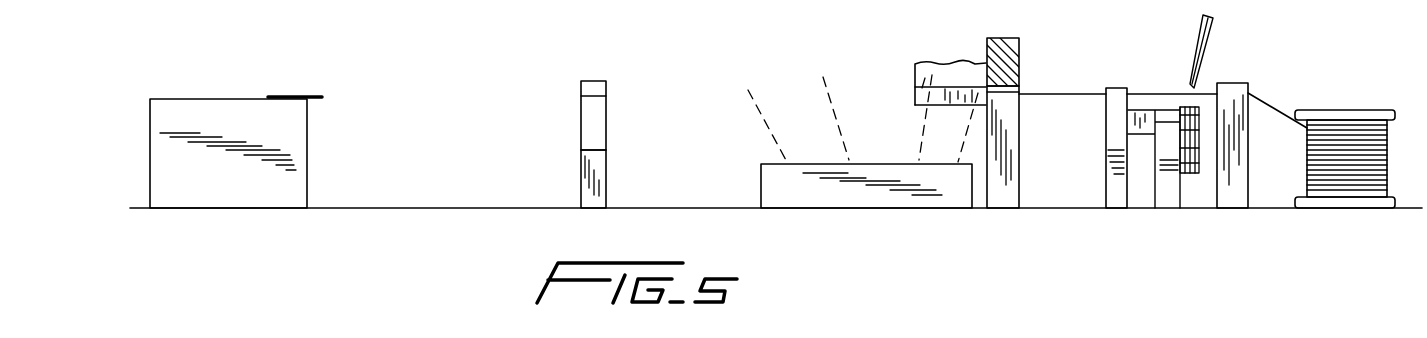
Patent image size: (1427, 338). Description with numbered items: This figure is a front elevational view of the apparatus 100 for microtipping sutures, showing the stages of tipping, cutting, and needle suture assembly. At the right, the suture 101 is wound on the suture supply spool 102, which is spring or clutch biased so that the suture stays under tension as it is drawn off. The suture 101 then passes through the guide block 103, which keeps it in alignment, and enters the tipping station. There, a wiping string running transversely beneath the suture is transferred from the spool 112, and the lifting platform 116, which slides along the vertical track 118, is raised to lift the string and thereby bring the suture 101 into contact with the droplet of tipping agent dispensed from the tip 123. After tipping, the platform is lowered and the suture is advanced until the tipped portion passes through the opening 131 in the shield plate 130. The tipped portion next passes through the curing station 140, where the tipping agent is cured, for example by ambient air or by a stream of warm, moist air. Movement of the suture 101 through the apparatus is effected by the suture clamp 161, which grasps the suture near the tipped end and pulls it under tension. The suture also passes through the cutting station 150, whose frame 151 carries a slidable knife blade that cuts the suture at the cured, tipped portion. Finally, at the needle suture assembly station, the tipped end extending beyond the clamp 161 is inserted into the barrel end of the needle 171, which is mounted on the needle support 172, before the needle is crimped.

The apparatus 100 is at (700, 96).
The suture 101 is at (1265, 106).
The suture supply spool 102 is at (1372, 112).
The guide block 103 is at (1228, 83).
The spool 112 is at (1198, 162).
The lifting platform 116 is at (1135, 120).
The vertical track 118 is at (1112, 172).
The tip 123 is at (1200, 40).
The shield plate 130 is at (1015, 55).
The opening 131 is at (1020, 138).
The curing station 140 is at (812, 197).
The cutting station 150 is at (578, 162).
The frame 151 is at (608, 162).
The suture clamp 161 is at (922, 70).
The needle 171 is at (288, 96).
The needle support 172 is at (222, 110).